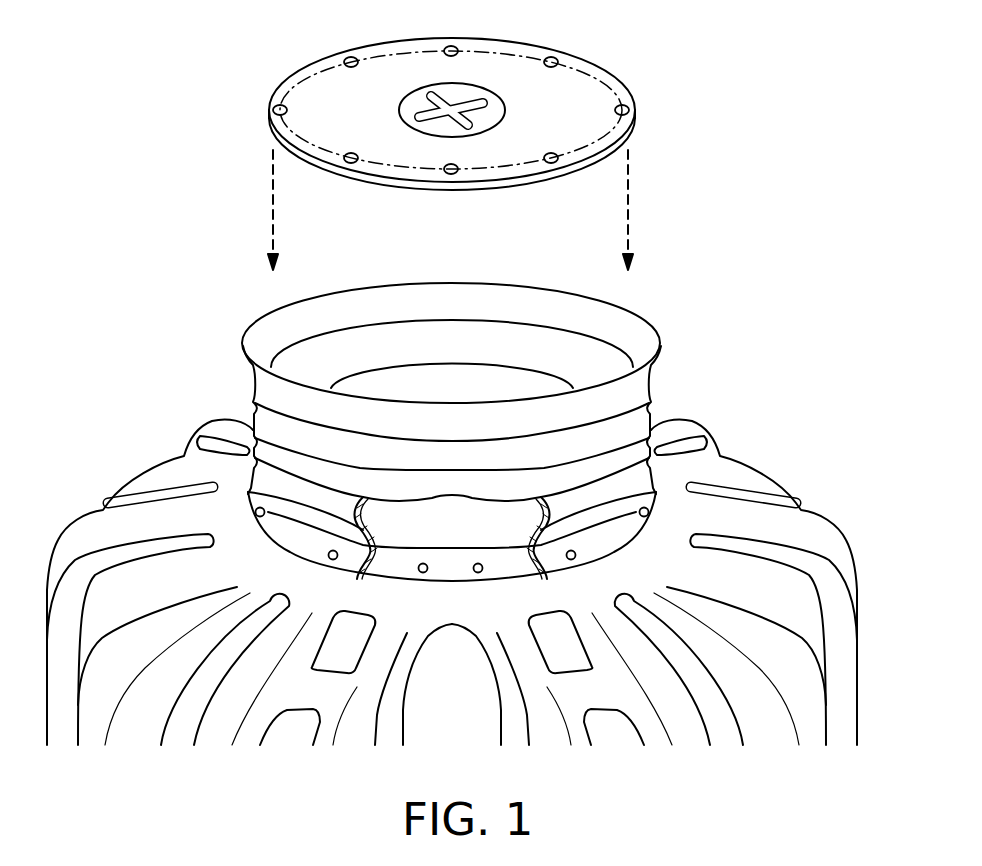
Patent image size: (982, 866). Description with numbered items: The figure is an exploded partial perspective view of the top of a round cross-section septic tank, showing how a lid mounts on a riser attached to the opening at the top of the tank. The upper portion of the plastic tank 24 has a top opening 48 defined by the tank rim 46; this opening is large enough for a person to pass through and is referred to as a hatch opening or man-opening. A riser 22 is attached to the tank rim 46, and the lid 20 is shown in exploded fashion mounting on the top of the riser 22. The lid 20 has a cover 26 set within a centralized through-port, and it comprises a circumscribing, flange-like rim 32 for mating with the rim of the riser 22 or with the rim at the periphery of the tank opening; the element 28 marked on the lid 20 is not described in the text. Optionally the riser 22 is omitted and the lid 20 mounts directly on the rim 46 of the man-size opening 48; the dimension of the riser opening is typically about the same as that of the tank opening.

The lid 20 is at (458, 137).
The riser 22 is at (485, 453).
The plastic tank 24 is at (778, 469).
The cover 26 is at (407, 105).
The cover plate 28 is at (507, 58).
The rim 32 is at (280, 94).
The tank rim 46 is at (452, 568).
The top opening 48 is at (439, 534).